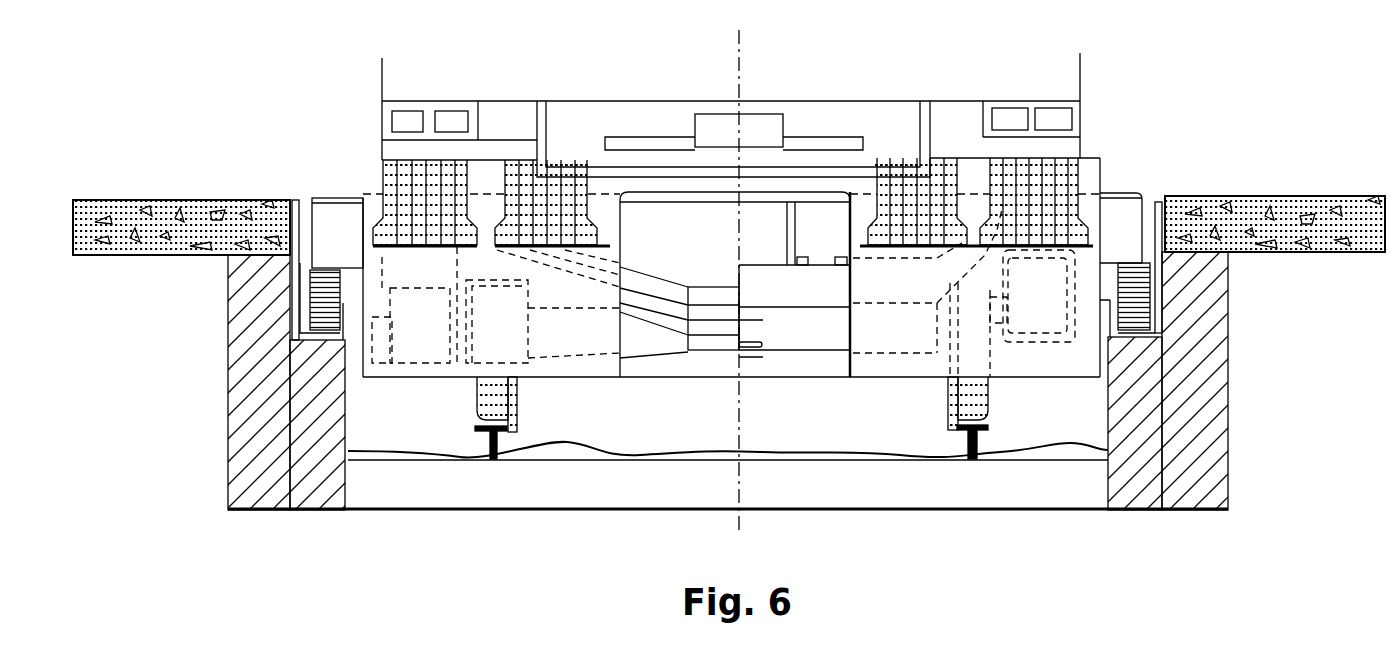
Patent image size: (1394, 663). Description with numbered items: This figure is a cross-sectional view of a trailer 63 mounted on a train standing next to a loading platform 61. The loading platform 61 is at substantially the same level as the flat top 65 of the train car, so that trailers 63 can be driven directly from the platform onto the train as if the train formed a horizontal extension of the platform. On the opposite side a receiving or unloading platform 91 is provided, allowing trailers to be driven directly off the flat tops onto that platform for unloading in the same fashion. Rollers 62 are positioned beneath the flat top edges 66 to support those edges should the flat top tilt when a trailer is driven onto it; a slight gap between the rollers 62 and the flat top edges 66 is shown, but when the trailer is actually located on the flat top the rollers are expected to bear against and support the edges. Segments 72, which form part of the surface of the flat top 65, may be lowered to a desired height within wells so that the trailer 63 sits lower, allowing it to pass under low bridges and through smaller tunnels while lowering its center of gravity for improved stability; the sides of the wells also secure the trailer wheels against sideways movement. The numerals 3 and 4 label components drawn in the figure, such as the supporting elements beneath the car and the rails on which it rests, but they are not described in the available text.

The foot 3 is at (477, 385).
The rail 4 is at (503, 460).
The loading platform 61 is at (137, 200).
The rollers 62 is at (337, 310).
The trailer 63 is at (565, 101).
The flat top 65 is at (320, 198).
The flat top edges 66 is at (312, 255).
The segments 72 is at (435, 247).
The receiving or unloading platform 91 is at (1263, 196).